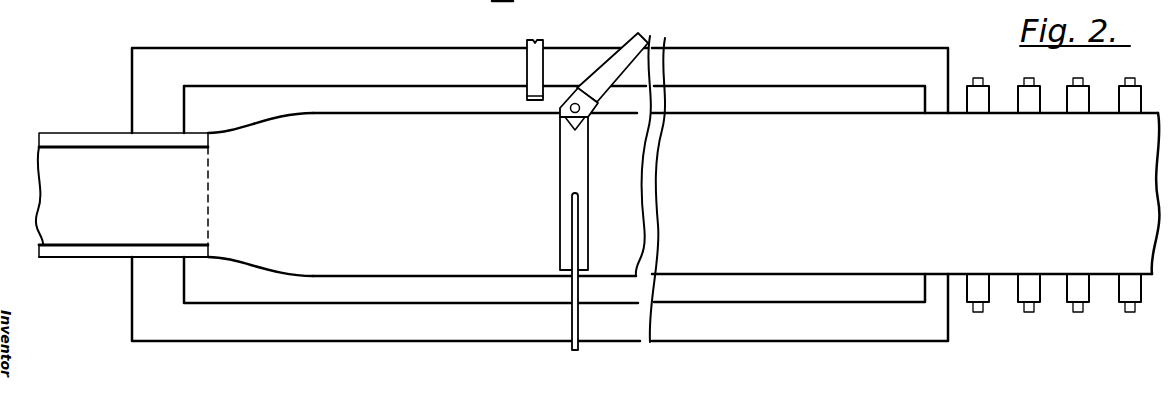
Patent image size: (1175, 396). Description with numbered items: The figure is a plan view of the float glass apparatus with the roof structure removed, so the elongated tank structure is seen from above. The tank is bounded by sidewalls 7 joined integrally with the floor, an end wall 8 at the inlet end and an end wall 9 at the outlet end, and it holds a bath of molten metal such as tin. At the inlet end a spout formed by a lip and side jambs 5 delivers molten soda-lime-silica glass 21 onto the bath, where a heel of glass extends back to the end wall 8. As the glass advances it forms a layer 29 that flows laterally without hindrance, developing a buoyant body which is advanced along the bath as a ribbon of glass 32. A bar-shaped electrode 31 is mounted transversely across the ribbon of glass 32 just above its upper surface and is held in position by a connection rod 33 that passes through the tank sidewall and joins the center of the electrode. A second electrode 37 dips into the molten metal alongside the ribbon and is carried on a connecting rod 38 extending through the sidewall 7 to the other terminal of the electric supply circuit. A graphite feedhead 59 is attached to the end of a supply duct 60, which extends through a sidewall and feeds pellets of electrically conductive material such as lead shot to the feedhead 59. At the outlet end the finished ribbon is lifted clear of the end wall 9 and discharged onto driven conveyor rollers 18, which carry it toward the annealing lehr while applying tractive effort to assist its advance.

The side jambs 5 is at (103, 142).
The sidewalls 7 is at (455, 57).
The end wall 8 is at (140, 265).
The end wall 9 is at (925, 53).
The driven conveyor rollers 18 is at (1068, 97).
The molten soda-lime-silica glass 21 is at (172, 210).
The layer 29 is at (270, 206).
The bar-shaped electrode 31 is at (565, 165).
The ribbon of glass 32 is at (442, 205).
The connection rod 33 is at (572, 227).
The second electrode 37 is at (527, 99).
The connecting rod 38 is at (537, 57).
The graphite feedhead 59 is at (558, 116).
The supply duct 60 is at (620, 57).